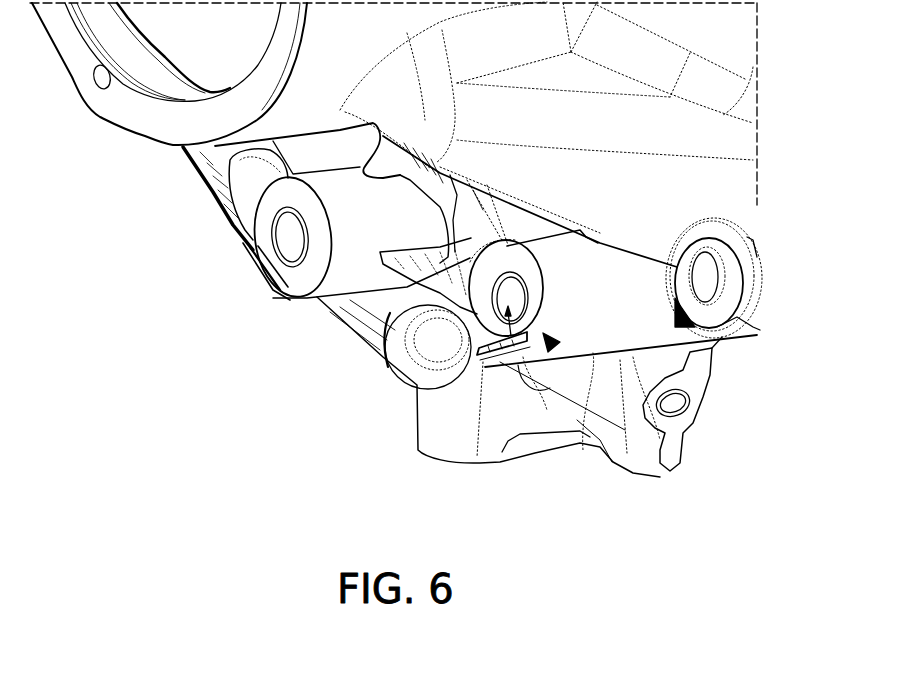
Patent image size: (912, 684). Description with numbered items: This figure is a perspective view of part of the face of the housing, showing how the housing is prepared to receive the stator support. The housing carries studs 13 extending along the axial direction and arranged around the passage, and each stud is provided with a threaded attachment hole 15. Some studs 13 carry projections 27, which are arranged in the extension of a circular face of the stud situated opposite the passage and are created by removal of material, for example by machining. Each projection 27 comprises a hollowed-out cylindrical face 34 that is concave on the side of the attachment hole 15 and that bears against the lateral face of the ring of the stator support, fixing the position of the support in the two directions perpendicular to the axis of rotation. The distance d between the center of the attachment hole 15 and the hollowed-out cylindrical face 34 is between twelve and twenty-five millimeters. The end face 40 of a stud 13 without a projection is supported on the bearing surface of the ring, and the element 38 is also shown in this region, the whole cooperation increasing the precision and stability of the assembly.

The stud 13 is at (343, 273).
The threaded attachment hole 15 is at (297, 240).
The projection 27 is at (277, 300).
The hollowed-out cylindrical face 34 is at (245, 258).
The plate strip 38 is at (262, 280).
The end face 40 is at (270, 210).
The dimension d is at (520, 322).